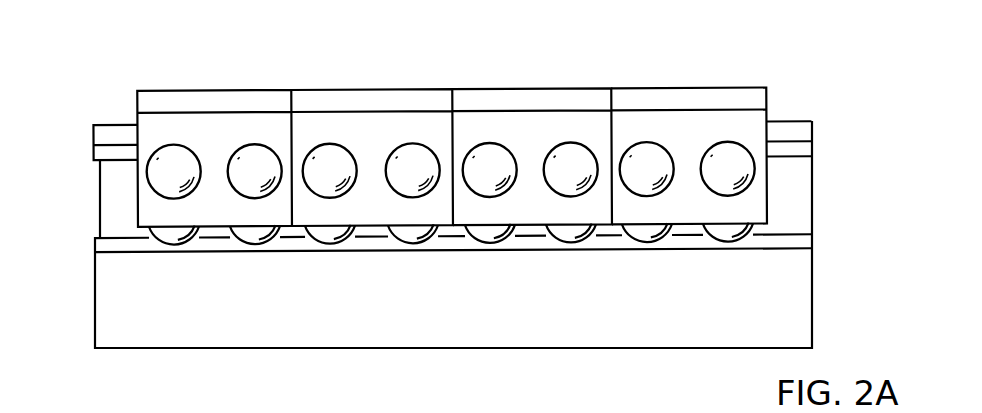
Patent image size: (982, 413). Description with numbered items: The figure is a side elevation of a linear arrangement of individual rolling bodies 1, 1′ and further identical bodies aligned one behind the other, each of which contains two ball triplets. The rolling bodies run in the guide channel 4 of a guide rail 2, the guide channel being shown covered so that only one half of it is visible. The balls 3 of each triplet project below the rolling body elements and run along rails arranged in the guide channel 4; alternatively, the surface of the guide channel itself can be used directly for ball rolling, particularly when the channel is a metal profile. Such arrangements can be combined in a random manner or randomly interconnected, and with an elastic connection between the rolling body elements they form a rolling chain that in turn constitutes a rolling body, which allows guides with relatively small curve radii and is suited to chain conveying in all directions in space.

The rolling body 1 is at (692, 103).
The rolling body 1′ is at (530, 103).
The guide rail 2 is at (82, 287).
The ball 3 is at (646, 244).
The guide channel 4 is at (112, 189).